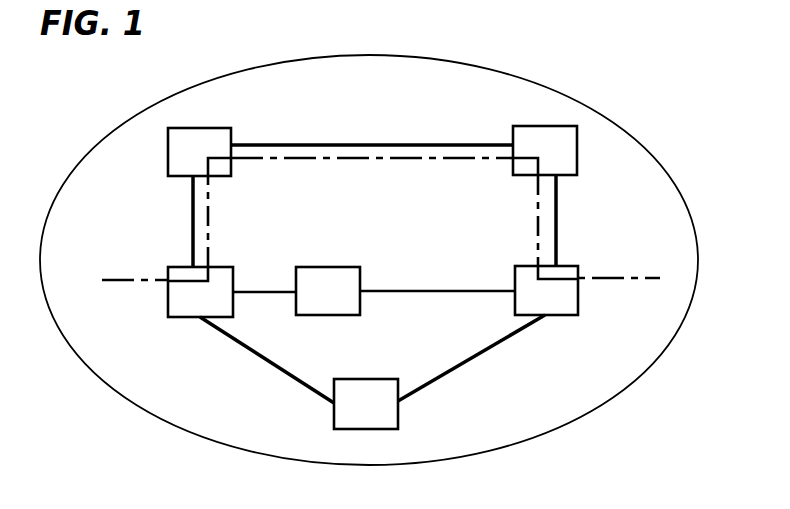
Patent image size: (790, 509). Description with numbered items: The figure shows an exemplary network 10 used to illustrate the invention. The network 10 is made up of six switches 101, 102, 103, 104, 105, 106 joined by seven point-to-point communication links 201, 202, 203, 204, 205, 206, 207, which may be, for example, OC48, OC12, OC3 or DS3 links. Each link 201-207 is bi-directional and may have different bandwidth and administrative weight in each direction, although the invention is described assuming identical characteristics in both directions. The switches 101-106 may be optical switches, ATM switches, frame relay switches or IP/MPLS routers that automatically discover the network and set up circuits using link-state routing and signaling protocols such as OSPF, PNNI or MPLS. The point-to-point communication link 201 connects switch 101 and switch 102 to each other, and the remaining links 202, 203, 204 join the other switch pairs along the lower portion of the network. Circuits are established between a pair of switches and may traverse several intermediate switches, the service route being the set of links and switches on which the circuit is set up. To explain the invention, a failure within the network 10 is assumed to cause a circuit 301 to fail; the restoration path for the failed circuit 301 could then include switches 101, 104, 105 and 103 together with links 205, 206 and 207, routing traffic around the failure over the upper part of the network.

The network 10 is at (123, 125).
The switch 101 is at (200, 292).
The switch 102 is at (328, 291).
The switch 103 is at (546, 290).
The switch 104 is at (199, 152).
The switch 105 is at (545, 150).
The switch 106 is at (366, 404).
The point-to-point communication link 201 is at (270, 290).
The point-to-point communication link 202 is at (445, 289).
The point-to-point communication link 203 is at (272, 366).
The point-to-point communication link 204 is at (470, 363).
The point-to-point communication link 205 is at (192, 214).
The point-to-point communication link 206 is at (341, 143).
The point-to-point communication link 207 is at (558, 223).
The circuit 301 is at (355, 162).